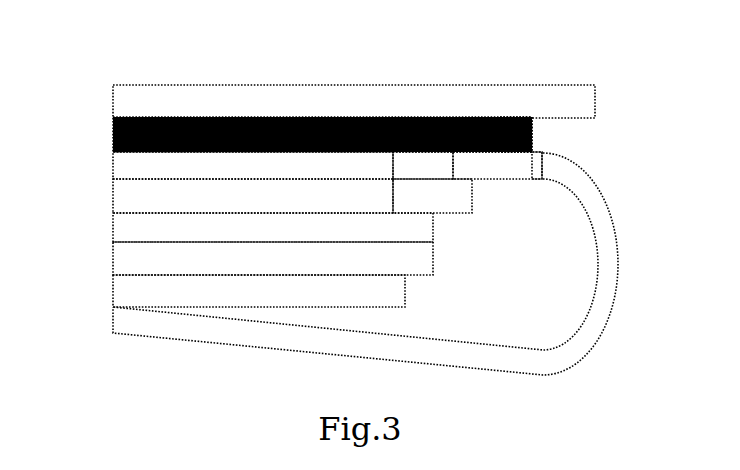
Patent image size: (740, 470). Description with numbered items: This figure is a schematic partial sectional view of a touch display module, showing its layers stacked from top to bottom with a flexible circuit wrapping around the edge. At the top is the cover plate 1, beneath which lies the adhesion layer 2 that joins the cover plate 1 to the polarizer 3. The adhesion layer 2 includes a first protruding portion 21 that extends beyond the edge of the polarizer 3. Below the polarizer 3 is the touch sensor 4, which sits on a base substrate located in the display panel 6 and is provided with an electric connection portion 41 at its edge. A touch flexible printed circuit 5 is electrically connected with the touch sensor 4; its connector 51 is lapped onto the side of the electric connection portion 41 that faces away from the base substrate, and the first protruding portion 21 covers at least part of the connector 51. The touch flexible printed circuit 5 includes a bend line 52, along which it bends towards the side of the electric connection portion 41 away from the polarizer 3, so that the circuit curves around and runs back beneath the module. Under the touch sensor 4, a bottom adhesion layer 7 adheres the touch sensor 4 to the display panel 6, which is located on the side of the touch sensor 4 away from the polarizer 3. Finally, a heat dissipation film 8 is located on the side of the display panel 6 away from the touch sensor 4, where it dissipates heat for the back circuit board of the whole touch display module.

The cover plate 1 is at (97, 92).
The adhesion layer 2 is at (97, 124).
The first protruding portion 21 is at (532, 128).
The polarizer 3 is at (97, 156).
The touch sensor 4 is at (97, 186).
The electric connection portion 41 is at (453, 200).
The touch flexible printed circuit 5 is at (631, 236).
The connector 51 is at (430, 170).
The bend line 52 is at (543, 168).
The display panel 6 is at (96, 250).
The bottom adhesion layer 7 is at (96, 220).
The heat dissipation film 8 is at (96, 283).